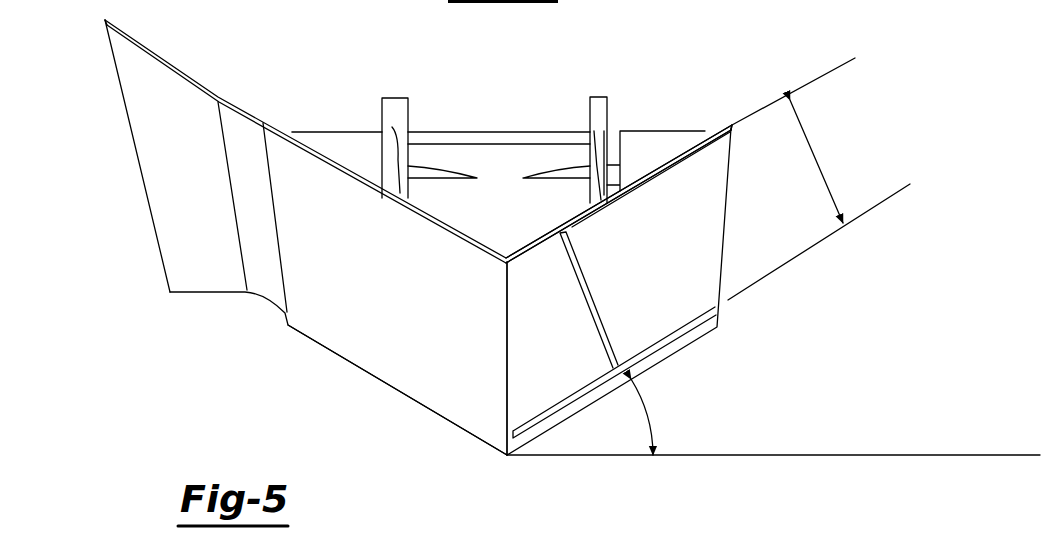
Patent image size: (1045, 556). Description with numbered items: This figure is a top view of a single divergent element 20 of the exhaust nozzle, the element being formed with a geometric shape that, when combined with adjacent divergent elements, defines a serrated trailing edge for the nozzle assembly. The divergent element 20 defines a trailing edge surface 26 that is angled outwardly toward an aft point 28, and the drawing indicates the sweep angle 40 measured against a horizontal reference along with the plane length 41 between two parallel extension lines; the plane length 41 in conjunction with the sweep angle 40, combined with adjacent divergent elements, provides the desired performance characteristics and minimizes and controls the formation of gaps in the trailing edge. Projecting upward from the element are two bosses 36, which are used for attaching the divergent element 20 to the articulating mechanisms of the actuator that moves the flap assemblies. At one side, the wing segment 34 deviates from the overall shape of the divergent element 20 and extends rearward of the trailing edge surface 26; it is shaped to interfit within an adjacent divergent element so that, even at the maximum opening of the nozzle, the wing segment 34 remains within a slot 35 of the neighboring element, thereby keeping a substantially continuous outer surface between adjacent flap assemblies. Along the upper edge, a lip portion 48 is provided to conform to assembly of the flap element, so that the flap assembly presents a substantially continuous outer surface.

The divergent element 20 is at (243, 358).
The trailing edge surface 26 is at (384, 385).
The aft point 28 is at (506, 458).
The wing segment 34 is at (153, 137).
The slot 35 is at (723, 272).
The bosses 36 is at (396, 97).
The sweep angle 40 is at (658, 408).
The plane length 41 is at (817, 160).
The lip portion 48 is at (675, 156).